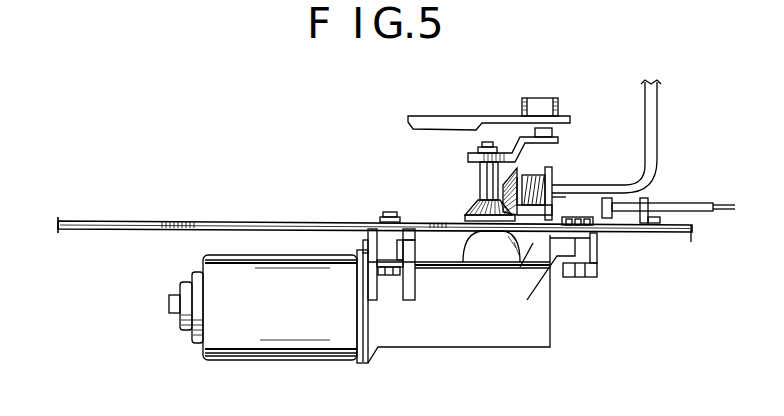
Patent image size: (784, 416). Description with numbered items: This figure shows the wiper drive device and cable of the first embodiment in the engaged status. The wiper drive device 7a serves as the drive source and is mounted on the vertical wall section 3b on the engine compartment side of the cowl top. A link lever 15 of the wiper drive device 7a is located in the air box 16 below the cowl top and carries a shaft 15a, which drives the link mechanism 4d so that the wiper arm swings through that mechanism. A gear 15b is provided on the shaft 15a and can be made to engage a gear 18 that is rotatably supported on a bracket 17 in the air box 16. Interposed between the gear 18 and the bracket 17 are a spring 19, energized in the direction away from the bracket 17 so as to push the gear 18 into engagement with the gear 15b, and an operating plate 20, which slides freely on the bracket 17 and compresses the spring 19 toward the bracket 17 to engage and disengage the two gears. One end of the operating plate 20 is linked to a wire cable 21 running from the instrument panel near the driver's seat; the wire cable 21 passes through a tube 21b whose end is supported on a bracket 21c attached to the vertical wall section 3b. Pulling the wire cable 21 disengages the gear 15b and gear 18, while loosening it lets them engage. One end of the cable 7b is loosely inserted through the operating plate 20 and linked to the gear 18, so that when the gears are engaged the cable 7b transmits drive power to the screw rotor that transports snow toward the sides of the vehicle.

The vertical wall section 3b is at (278, 221).
The link mechanism 4d is at (450, 122).
The wiper drive device 7a is at (448, 323).
The cable 7b is at (657, 106).
The link lever 15 is at (527, 147).
The shaft 15a is at (482, 177).
The gear 15b is at (475, 202).
The air box 16 is at (335, 207).
The bracket 17 is at (557, 193).
The gear 18 is at (507, 153).
The spring 19 is at (551, 175).
The operating plate 20 is at (500, 190).
The wire cable 21 is at (627, 211).
The tube 21b is at (693, 203).
The bracket 21c is at (653, 221).